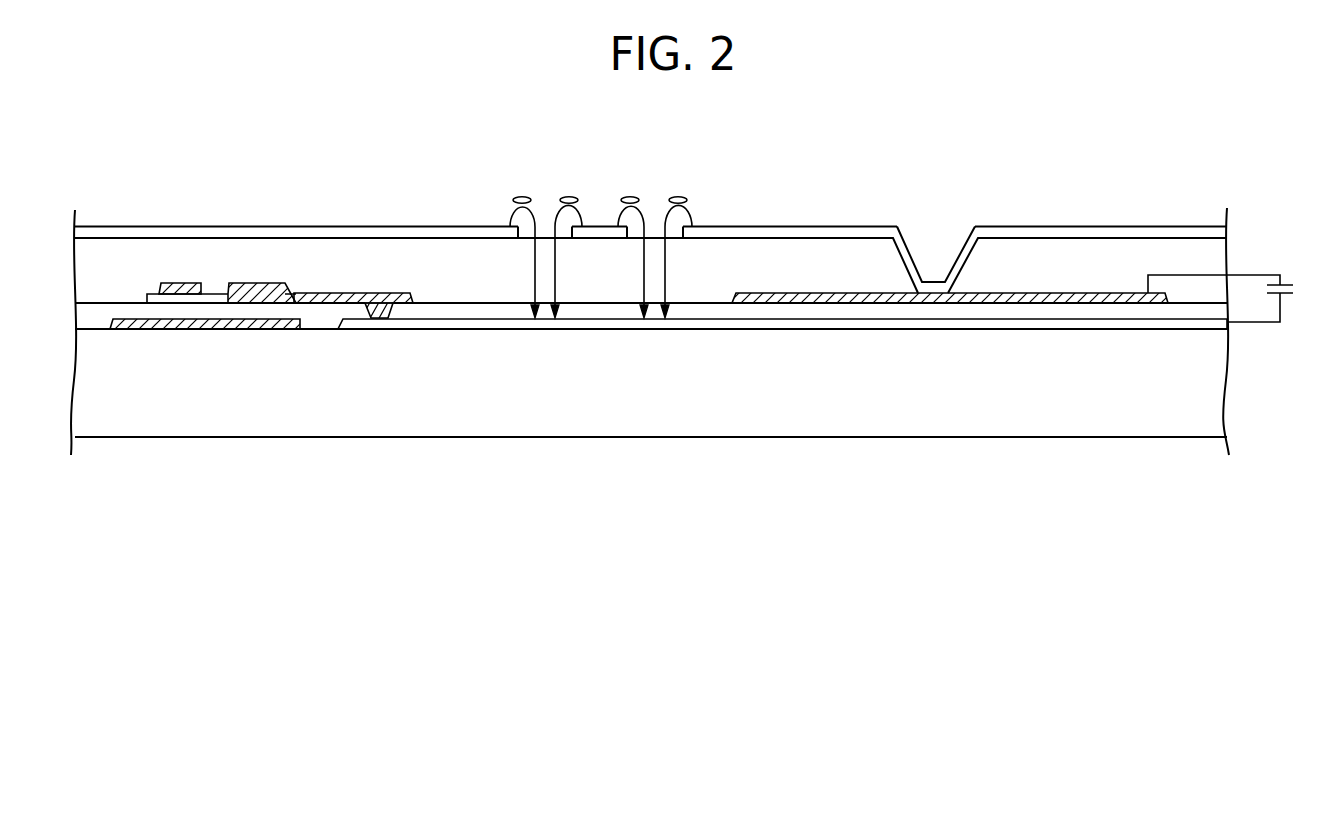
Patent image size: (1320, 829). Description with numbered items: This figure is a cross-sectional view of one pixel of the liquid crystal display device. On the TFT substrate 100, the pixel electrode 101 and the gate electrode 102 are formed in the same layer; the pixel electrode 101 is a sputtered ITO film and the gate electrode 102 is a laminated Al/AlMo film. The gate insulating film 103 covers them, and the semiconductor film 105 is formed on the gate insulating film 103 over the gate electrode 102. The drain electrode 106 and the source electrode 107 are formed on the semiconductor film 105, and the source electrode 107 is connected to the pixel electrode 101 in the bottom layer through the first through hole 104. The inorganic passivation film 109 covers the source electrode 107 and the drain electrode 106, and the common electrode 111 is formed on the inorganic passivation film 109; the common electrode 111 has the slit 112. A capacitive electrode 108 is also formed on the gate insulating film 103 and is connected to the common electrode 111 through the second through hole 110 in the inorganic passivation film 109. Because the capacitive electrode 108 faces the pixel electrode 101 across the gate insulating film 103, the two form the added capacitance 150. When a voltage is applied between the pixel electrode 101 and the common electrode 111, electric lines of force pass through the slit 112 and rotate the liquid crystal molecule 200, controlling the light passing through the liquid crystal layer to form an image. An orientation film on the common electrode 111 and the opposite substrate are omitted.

The TFT substrate 100 is at (1165, 390).
The pixel electrode 101 is at (748, 323).
The gate electrode 102 is at (265, 327).
The gate insulating film 103 is at (135, 310).
The first through hole 104 is at (370, 313).
The semiconductor film 105 is at (192, 297).
The drain electrode 106 is at (182, 282).
The source electrode 107 is at (265, 282).
The capacitive electrode 108 is at (1023, 300).
The inorganic passivation film 109 is at (1065, 247).
The second through hole 110 is at (937, 250).
The common electrode 111 is at (368, 225).
The slit 112 is at (546, 225).
The added capacitance 150 is at (1290, 300).
The liquid crystal molecule 200 is at (693, 199).